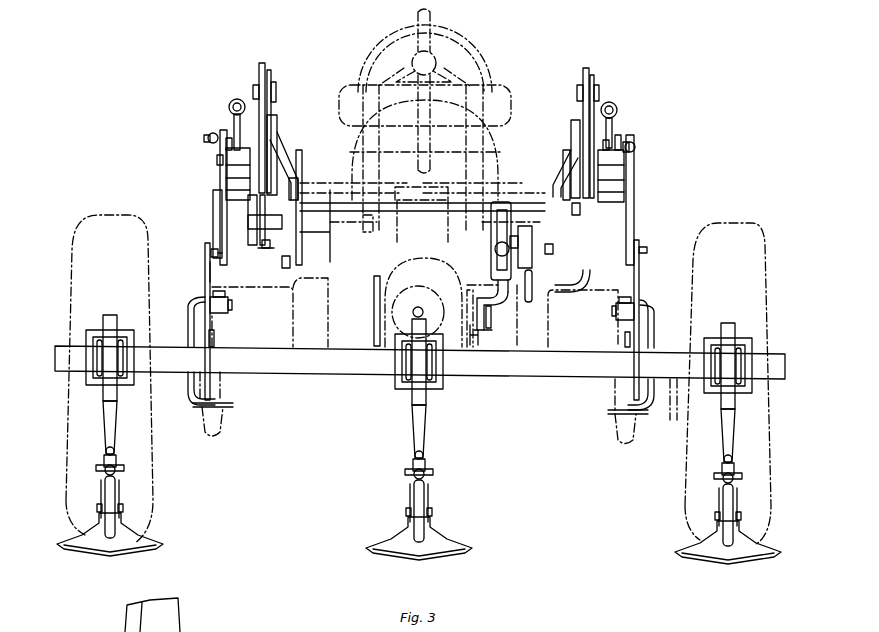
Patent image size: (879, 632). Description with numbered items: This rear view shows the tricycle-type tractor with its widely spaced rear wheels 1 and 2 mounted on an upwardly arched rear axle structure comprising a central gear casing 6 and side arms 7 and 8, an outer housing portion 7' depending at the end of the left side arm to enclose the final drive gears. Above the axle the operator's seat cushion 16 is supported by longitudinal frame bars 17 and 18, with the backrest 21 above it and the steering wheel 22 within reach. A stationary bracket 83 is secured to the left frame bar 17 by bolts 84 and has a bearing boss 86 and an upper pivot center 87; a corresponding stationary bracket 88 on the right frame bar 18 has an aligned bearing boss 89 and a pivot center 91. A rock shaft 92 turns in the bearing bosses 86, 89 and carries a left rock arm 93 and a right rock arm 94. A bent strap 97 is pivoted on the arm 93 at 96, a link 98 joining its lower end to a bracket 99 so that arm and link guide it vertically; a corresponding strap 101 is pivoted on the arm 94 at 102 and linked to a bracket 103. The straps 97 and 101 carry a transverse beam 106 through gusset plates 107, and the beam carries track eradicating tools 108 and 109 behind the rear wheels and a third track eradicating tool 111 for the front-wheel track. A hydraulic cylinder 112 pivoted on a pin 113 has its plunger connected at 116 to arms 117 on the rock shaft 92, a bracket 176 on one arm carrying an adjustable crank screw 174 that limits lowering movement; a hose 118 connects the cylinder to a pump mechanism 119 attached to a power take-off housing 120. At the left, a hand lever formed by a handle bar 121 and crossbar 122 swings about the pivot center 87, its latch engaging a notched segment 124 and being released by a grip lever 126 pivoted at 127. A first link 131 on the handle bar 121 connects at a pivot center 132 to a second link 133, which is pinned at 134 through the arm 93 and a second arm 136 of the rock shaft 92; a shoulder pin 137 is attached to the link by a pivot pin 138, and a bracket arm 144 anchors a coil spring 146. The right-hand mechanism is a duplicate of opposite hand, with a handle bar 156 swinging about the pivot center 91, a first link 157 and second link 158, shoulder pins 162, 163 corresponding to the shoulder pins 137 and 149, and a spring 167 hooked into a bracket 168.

The rear wheel 1 is at (143, 502).
The rear wheel 2 is at (682, 500).
The central gear casing 6 is at (396, 283).
The side arm 7 is at (256, 327).
The outer housing portion 7' is at (221, 404).
The side arm 8 is at (540, 345).
The seat cushion 16 is at (388, 192).
The longitudinal frame bar 17 is at (306, 273).
The longitudinal frame bar 18 is at (548, 290).
The backrest 21 is at (506, 99).
The steering wheel 22 is at (478, 40).
The stationary bracket 83 is at (284, 163).
The bolts 84 is at (283, 256).
The bearing boss 86 is at (268, 212).
The pivot center 87 is at (278, 128).
The stationary bracket 88 is at (571, 150).
The bearing boss 89 is at (574, 214).
The pivot center 91 is at (571, 130).
The rock shaft 92 is at (336, 212).
The rock arm 93 is at (213, 222).
The rock arm 94 is at (634, 230).
The pivot 96 is at (205, 251).
The bent strap 97 is at (206, 270).
The link 98 is at (193, 322).
The bracket 99 is at (230, 313).
The strap 101 is at (640, 272).
The pivot 102 is at (645, 252).
The bracket 103 is at (616, 318).
The transverse beam 106 is at (62, 370).
The gusset plates 107 is at (216, 340).
The track eradicating tool 108 is at (140, 553).
The track eradicating tool 109 is at (696, 561).
The third track eradicating tool 111 is at (450, 555).
The hydraulic cylinder 112 is at (494, 262).
The pin 113 is at (495, 288).
The pivotal connection 116 is at (495, 250).
The arms 117 is at (502, 202).
The hose 118 is at (490, 322).
The pump mechanism 119 is at (490, 340).
The power take-off housing 120 is at (387, 327).
The handle bar 121 is at (266, 68).
The crossbar 122 is at (276, 142).
The notched segment 124 is at (291, 178).
The grip lever 126 is at (256, 85).
The pivot 127 is at (276, 92).
The first link 131 is at (245, 178).
The pivot center 132 is at (217, 163).
The second link 133 is at (220, 193).
The pivot center 134 is at (209, 242).
The second arm 136 is at (262, 243).
The shoulder pin 137 is at (210, 134).
The pivot pin 138 is at (208, 142).
The bracket arm 144 is at (230, 110).
The coil spring 146 is at (241, 103).
The shoulder pin 149 is at (229, 136).
The handle bar 156 is at (590, 72).
The first link 157 is at (572, 167).
The second link 158 is at (628, 196).
The shoulder pin 162 is at (634, 150).
The shoulder pin 163 is at (620, 140).
The spring 167 is at (613, 105).
The bracket 168 is at (612, 123).
The crank screw 174 is at (530, 305).
The bracket 176 is at (527, 247).